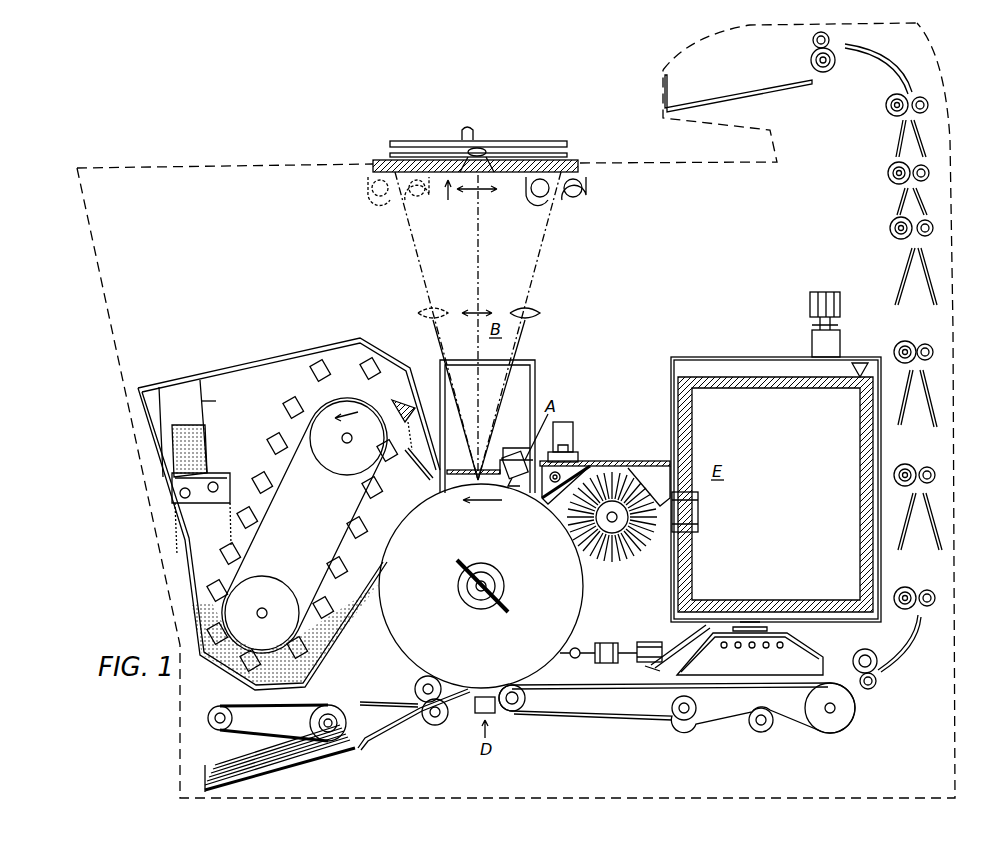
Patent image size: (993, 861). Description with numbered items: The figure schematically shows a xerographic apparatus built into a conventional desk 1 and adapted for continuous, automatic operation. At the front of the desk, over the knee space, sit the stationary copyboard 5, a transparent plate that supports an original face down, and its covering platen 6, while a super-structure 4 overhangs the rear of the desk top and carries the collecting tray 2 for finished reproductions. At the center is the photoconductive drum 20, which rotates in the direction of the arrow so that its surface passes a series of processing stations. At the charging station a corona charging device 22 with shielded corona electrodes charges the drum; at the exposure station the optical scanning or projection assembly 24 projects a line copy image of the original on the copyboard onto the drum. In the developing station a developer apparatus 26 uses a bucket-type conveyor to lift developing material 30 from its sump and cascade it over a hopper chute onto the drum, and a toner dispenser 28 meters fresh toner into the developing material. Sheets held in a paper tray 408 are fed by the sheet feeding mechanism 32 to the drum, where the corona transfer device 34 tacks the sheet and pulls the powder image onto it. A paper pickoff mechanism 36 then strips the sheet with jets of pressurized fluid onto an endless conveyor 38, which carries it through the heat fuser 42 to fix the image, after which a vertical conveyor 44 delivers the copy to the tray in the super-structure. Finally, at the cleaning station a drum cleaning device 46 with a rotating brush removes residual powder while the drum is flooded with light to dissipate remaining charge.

The desk 1 is at (135, 167).
The collecting tray 2 is at (752, 92).
The super-structure 4 is at (675, 45).
The copyboard 5 is at (477, 199).
The platen 6 is at (430, 137).
The drum 20 is at (485, 527).
The corona charging device 22 is at (523, 462).
The optical scanning or projection assembly 24 is at (520, 358).
The developer apparatus 26 is at (237, 349).
The toner dispenser 28 is at (222, 438).
The developing material 30 is at (225, 672).
The sheet feeding mechanism 32 is at (376, 748).
The corona transfer device 34 is at (495, 712).
The paper pickoff mechanism 36 is at (600, 673).
The endless conveyor 38 is at (586, 728).
The heat fuser 42 is at (815, 647).
The vertical conveyor 44 is at (941, 462).
The drum cleaning device 46 is at (628, 455).
The paper tray 408 is at (290, 774).